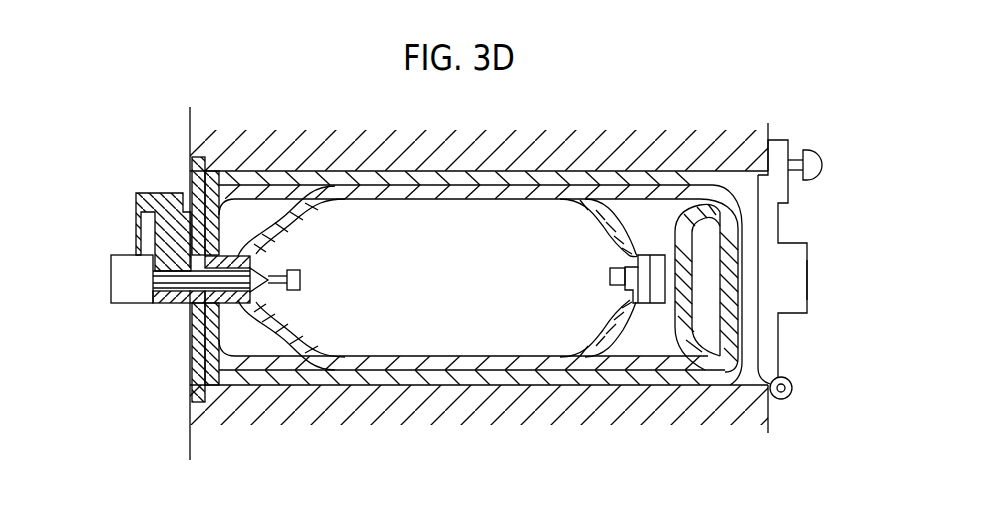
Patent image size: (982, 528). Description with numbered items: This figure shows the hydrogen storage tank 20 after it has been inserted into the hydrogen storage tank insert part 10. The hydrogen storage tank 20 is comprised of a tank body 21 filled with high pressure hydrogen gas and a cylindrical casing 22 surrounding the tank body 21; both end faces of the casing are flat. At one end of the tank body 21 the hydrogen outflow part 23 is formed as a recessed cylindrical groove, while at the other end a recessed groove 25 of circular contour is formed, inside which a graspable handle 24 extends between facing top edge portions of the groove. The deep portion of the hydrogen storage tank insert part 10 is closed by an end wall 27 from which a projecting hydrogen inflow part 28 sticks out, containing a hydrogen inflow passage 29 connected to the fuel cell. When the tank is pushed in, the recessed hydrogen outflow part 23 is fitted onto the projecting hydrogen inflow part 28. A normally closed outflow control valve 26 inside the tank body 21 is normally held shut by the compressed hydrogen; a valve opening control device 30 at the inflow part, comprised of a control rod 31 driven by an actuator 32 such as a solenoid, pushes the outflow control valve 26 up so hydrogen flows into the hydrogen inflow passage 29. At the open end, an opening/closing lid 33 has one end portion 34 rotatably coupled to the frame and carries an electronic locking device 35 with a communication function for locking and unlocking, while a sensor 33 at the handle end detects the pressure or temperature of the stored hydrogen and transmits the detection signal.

The hydrogen storage tank insert part 10 is at (750, 368).
The hydrogen storage tank 20 is at (561, 172).
The tank body 21 is at (483, 198).
The cylindrical casing 22 is at (360, 180).
The hydrogen outflow part 23 is at (235, 293).
The handle 24 is at (700, 268).
The recessed groove 25 is at (718, 240).
The outflow control valve 26 is at (302, 276).
The end wall 27 is at (197, 368).
The projecting hydrogen inflow part 28 is at (232, 276).
The hydrogen inflow passage 29 is at (142, 215).
The valve opening control device 30 is at (119, 278).
The control rod 31 is at (171, 305).
The actuator 32 is at (131, 272).
The opening/closing lid 33 is at (638, 256).
The one end portion of the opening/closing lid 34 is at (793, 387).
The electronic locking device 35 is at (795, 308).